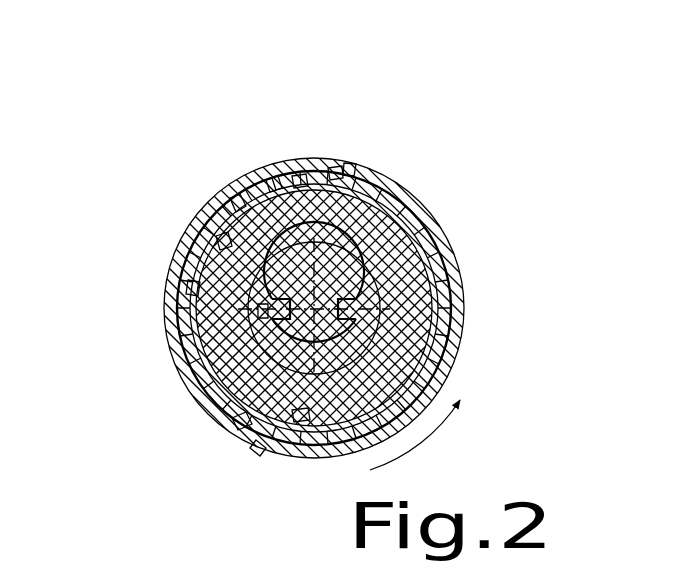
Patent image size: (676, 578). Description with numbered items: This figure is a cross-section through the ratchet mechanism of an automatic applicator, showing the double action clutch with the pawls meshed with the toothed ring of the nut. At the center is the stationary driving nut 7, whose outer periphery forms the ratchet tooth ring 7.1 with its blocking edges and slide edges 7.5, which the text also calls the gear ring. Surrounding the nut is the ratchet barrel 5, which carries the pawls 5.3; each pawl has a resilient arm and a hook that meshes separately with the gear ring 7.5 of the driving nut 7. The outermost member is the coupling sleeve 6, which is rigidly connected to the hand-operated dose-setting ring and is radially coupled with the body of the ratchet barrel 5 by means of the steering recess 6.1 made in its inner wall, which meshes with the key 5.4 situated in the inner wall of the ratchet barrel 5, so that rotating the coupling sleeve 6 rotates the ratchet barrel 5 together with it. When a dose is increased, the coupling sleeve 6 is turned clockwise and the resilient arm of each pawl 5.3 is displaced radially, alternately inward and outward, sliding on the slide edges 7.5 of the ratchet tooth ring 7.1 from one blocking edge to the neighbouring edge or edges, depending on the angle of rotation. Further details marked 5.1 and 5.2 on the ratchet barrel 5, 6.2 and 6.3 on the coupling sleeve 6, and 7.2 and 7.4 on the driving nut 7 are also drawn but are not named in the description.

The ratchet barrel 5 is at (442, 220).
The housing ring feature 5.1 is at (262, 446).
The housing ring feature 5.2 is at (347, 170).
The pawl 5.3 is at (335, 172).
The key 5.4 is at (272, 185).
The coupling sleeve 6 is at (437, 313).
The steering recess 6.1 is at (236, 204).
The intermediate ring feature 6.2 is at (192, 287).
The intermediate ring feature 6.3 is at (300, 178).
The driving nut 7 is at (395, 358).
The ratchet tooth ring 7.1 is at (222, 242).
The rotor hub 7.2 is at (262, 312).
The rotor pocket 7.4 is at (240, 428).
The slide edges 7.5 is at (300, 415).